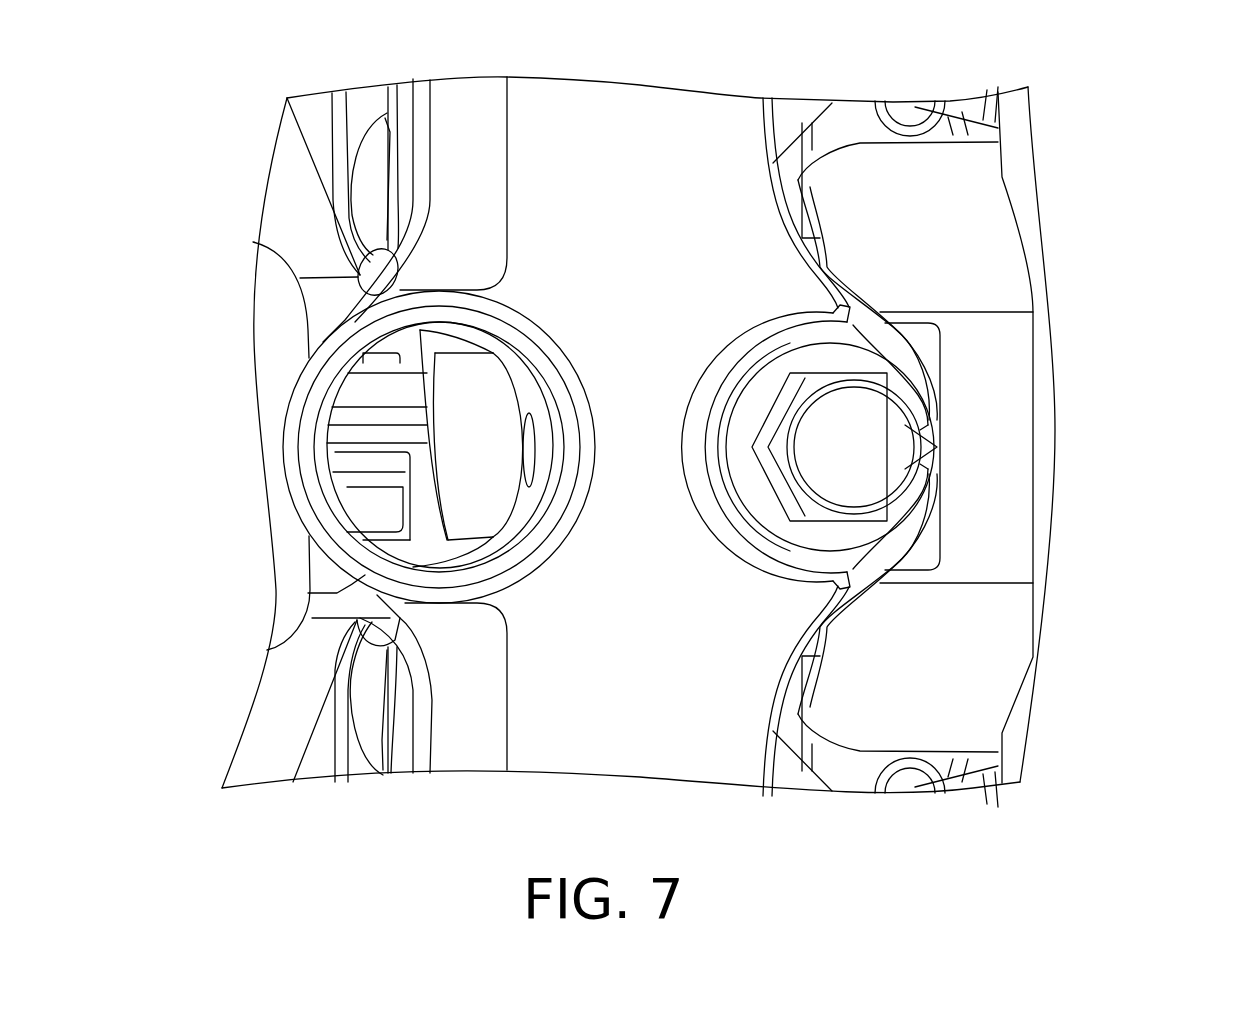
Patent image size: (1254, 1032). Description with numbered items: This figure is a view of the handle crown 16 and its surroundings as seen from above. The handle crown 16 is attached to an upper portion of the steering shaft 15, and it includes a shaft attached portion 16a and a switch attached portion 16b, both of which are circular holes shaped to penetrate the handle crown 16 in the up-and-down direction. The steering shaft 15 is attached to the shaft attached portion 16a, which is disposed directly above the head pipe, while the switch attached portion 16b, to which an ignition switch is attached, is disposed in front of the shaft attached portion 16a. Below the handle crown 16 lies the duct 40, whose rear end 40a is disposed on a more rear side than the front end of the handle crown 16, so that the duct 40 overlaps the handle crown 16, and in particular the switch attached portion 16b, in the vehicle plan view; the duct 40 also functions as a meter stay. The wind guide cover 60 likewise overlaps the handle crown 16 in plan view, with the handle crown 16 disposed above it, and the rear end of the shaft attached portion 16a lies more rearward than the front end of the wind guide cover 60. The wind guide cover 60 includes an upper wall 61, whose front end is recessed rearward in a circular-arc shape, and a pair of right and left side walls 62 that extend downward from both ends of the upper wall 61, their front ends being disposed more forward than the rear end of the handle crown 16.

The steering shaft 15 is at (892, 460).
The handle crown 16 is at (655, 173).
The shaft attached portion 16a is at (902, 527).
The switch attached portion 16b is at (297, 455).
The duct 40 is at (283, 583).
The rear end of the duct 40a is at (277, 312).
The wind guide cover 60 is at (865, 180).
The upper wall 61 is at (997, 557).
The side walls 62 is at (963, 179).